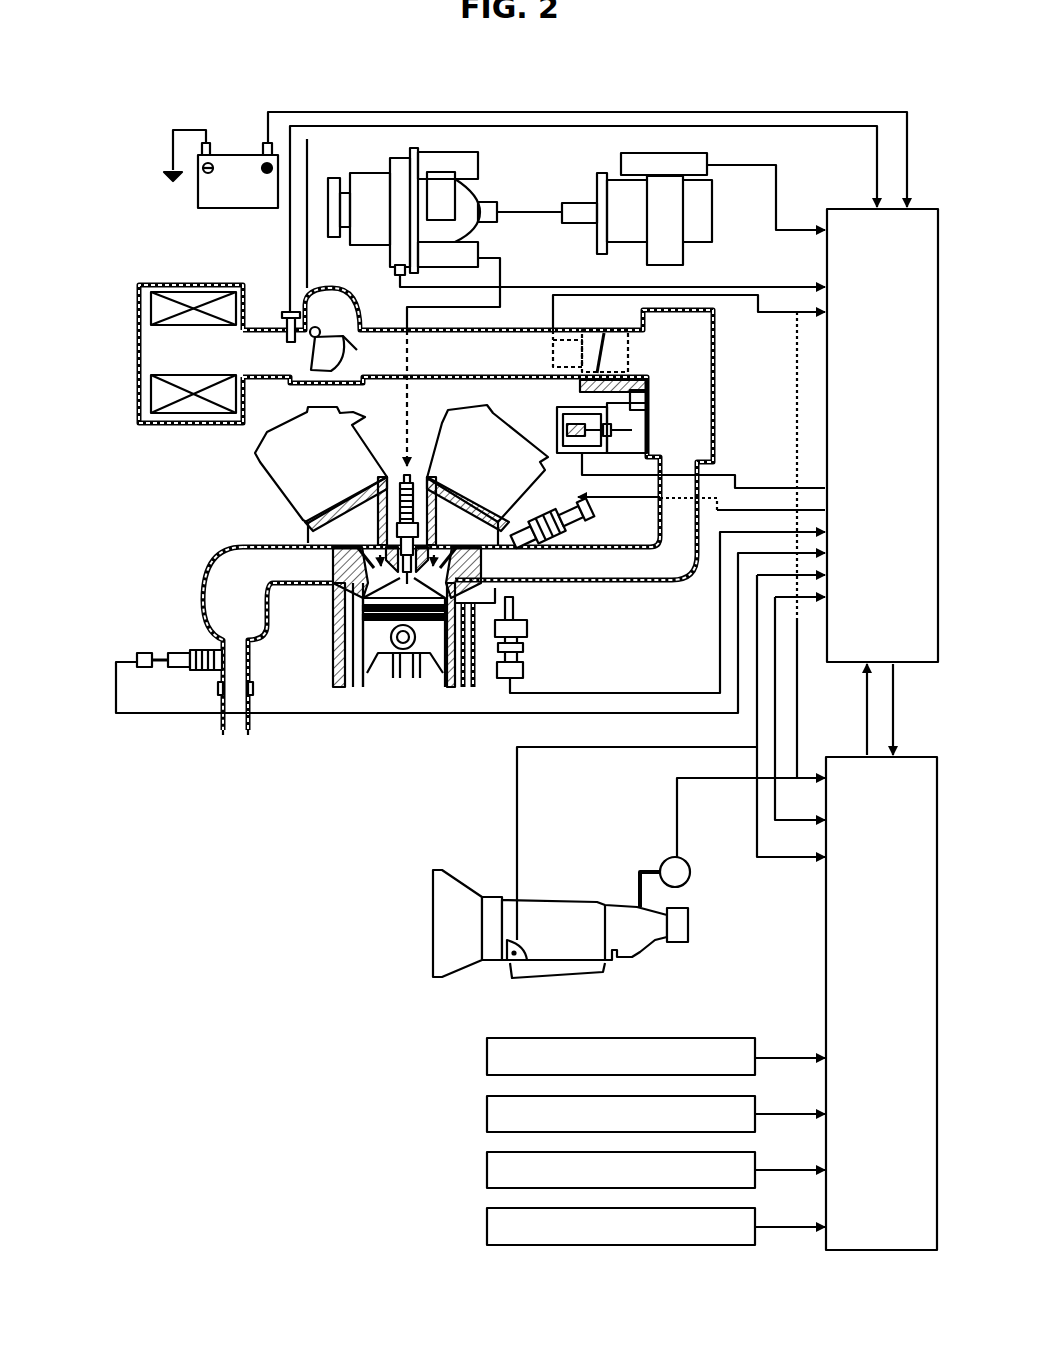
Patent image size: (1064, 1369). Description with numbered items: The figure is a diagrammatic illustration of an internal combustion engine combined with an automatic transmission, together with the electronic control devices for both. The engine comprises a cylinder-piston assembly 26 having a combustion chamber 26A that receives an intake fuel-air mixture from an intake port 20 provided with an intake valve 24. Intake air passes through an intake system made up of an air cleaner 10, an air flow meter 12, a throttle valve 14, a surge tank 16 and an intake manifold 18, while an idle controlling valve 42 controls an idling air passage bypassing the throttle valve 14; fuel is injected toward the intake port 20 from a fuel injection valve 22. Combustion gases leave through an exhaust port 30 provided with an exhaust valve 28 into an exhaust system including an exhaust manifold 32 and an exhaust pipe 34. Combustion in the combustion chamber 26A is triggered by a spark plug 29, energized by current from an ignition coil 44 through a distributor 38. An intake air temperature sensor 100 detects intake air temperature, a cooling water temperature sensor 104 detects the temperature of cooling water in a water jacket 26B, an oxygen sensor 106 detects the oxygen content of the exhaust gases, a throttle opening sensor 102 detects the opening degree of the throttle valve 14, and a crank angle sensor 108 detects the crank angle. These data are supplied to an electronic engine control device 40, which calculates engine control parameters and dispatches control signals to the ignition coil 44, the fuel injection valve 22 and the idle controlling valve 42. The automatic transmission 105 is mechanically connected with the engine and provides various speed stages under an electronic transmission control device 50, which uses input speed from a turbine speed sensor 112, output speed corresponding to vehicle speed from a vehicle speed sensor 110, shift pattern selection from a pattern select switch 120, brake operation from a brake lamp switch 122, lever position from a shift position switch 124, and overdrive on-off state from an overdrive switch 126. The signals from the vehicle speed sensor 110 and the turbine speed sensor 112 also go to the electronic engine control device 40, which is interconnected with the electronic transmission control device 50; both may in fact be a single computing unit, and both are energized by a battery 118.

The air cleaner 10 is at (138, 352).
The air flow meter 12 is at (338, 310).
The throttle valve 14 is at (615, 344).
The surge tank 16 is at (690, 420).
The intake manifold 18 is at (614, 582).
The intake port 20 is at (446, 527).
The fuel injection valve 22 is at (577, 515).
The intake valve 24 is at (445, 576).
The cylinder-piston assembly 26 is at (330, 660).
The combustion chamber 26A is at (338, 602).
The water jacket 26B is at (466, 672).
The exhaust valve 28 is at (368, 576).
The spark plug 29 is at (400, 478).
The exhaust port 30 is at (373, 537).
The exhaust manifold 32 is at (220, 572).
The exhaust pipe 34 is at (230, 727).
The distributor 38 is at (365, 182).
The electronic engine control device 40 is at (915, 662).
The idle controlling valve 42 is at (557, 428).
The ignition coil 44 is at (712, 213).
The electronic transmission control device 50 is at (913, 760).
The intake air temperature sensor 100 is at (282, 318).
The throttle opening sensor 102 is at (566, 364).
The cooling water temperature sensor 104 is at (524, 633).
The automatic transmission 105 is at (557, 905).
The oxygen sensor 106 is at (208, 651).
The crank angle sensor 108 is at (394, 272).
The vehicle speed sensor 110 is at (690, 880).
The turbine speed sensor 112 is at (505, 963).
The battery 118 is at (242, 148).
The pattern select switch 120 is at (487, 1056).
The brake lamp switch 122 is at (487, 1114).
The shift position switch 124 is at (487, 1170).
The overdrive switch 126 is at (487, 1227).